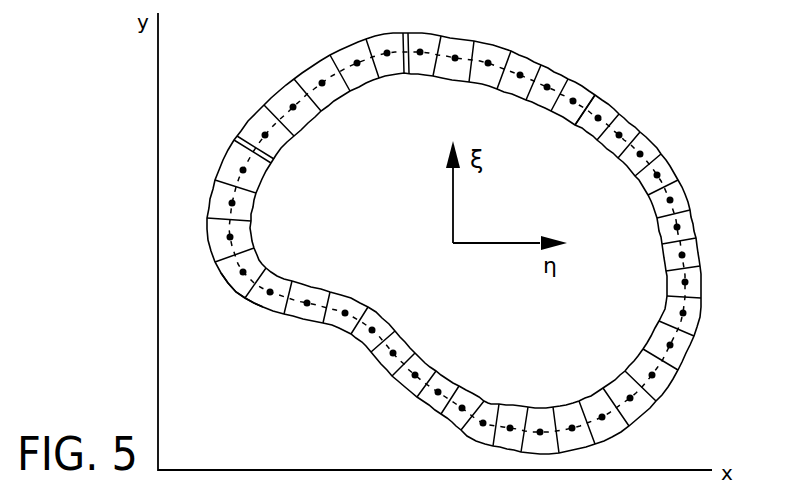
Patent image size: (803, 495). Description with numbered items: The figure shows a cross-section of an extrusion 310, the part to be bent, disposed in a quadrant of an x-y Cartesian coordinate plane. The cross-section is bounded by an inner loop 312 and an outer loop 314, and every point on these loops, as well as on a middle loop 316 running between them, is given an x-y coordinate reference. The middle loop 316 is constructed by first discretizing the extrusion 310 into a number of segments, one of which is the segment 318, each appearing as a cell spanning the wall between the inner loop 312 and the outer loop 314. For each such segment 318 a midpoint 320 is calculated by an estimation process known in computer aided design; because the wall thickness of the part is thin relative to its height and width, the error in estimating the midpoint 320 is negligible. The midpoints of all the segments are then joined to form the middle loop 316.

The extrusion 310 is at (484, 241).
The inner loop 312 is at (605, 145).
The outer loop 314 is at (532, 53).
The middle loop 316 is at (410, 74).
The segment 318 is at (268, 326).
The midpoint 320 is at (272, 283).